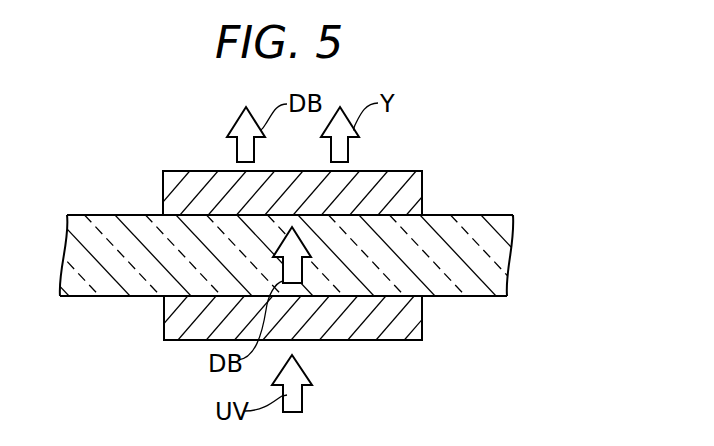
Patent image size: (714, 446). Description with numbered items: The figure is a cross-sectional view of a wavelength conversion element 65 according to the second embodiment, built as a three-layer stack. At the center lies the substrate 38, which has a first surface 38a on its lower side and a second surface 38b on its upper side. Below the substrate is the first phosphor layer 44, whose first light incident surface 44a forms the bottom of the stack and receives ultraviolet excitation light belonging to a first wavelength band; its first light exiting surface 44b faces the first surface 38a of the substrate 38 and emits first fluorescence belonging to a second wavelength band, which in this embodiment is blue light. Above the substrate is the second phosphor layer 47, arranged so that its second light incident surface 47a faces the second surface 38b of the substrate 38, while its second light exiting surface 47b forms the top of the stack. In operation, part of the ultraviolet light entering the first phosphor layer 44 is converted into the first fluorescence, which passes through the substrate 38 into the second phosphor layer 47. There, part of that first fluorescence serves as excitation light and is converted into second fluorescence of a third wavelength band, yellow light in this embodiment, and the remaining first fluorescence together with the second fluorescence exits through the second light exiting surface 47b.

The wavelength conversion element 65 is at (167, 142).
The second phosphor layer 47 is at (422, 187).
The second light incident surface 47a is at (175, 222).
The second light exiting surface 47b is at (178, 171).
The substrate 38 is at (497, 257).
The first surface 38a is at (487, 297).
The second surface 38b is at (487, 215).
The first phosphor layer 44 is at (417, 322).
The first light incident surface 44a is at (177, 340).
The first light exiting surface 44b is at (172, 290).